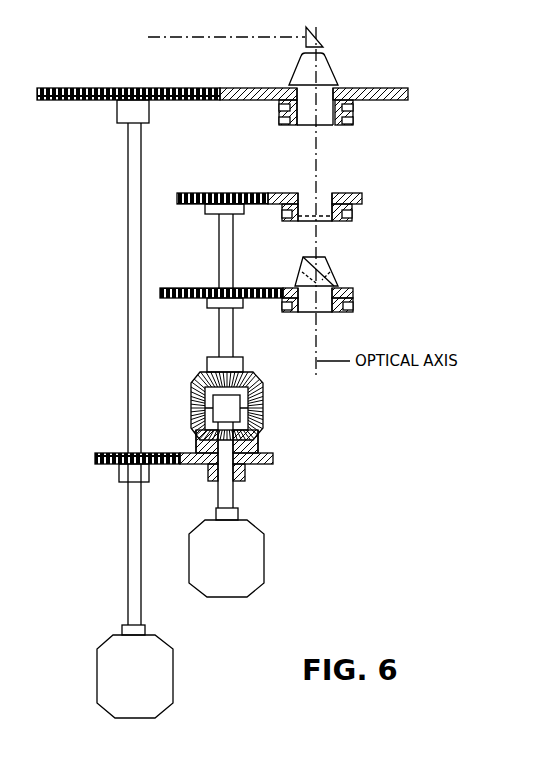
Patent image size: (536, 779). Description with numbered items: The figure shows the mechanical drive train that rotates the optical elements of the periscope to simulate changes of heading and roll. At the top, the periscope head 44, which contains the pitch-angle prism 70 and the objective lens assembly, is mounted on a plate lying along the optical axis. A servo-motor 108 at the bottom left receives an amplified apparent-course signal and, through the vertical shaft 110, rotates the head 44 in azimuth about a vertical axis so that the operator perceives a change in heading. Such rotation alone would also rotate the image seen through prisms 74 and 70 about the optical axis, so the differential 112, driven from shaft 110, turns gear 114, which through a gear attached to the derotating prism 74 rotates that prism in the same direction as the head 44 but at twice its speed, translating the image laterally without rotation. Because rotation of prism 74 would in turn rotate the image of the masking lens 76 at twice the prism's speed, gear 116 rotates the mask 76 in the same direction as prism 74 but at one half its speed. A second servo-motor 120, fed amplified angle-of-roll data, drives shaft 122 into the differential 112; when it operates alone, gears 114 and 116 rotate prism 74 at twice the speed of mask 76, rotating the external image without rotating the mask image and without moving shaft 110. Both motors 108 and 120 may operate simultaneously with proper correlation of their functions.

The pitch-angle prism 70 is at (321, 36).
The periscope head 44 is at (338, 72).
The masking lens 76 is at (320, 214).
The gear 116 is at (253, 193).
The gear 114 is at (205, 288).
The derotating prism 74 is at (330, 270).
The shaft 110 is at (133, 316).
The differential 112 is at (264, 420).
The shaft 122 is at (236, 497).
The servo-motor 120 is at (237, 568).
The servo-motor 108 is at (146, 686).